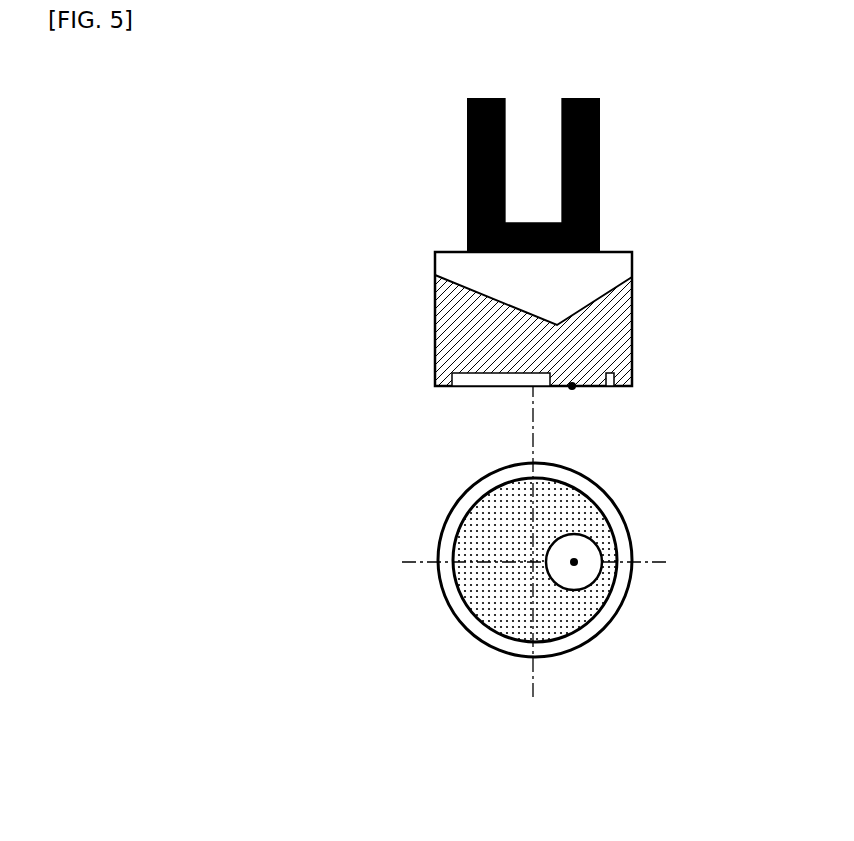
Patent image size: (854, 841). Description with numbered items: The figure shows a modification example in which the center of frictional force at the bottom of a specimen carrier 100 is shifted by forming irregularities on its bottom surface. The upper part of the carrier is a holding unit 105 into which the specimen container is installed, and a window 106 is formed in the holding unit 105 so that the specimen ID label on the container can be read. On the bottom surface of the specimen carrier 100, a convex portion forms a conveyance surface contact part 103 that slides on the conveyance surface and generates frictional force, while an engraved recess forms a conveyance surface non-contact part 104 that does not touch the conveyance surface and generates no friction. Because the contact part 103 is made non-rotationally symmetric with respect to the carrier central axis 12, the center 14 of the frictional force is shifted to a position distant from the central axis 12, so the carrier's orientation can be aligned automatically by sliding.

The specimen carrier 100 is at (632, 278).
The holding unit 105 is at (467, 174).
The window 106 is at (517, 155).
The conveyance surface non-contact part 104 is at (477, 385).
The conveyance surface contact part 103 is at (606, 387).
The center of the frictional force 14 is at (572, 386).
The carrier central axis 12 is at (532, 562).